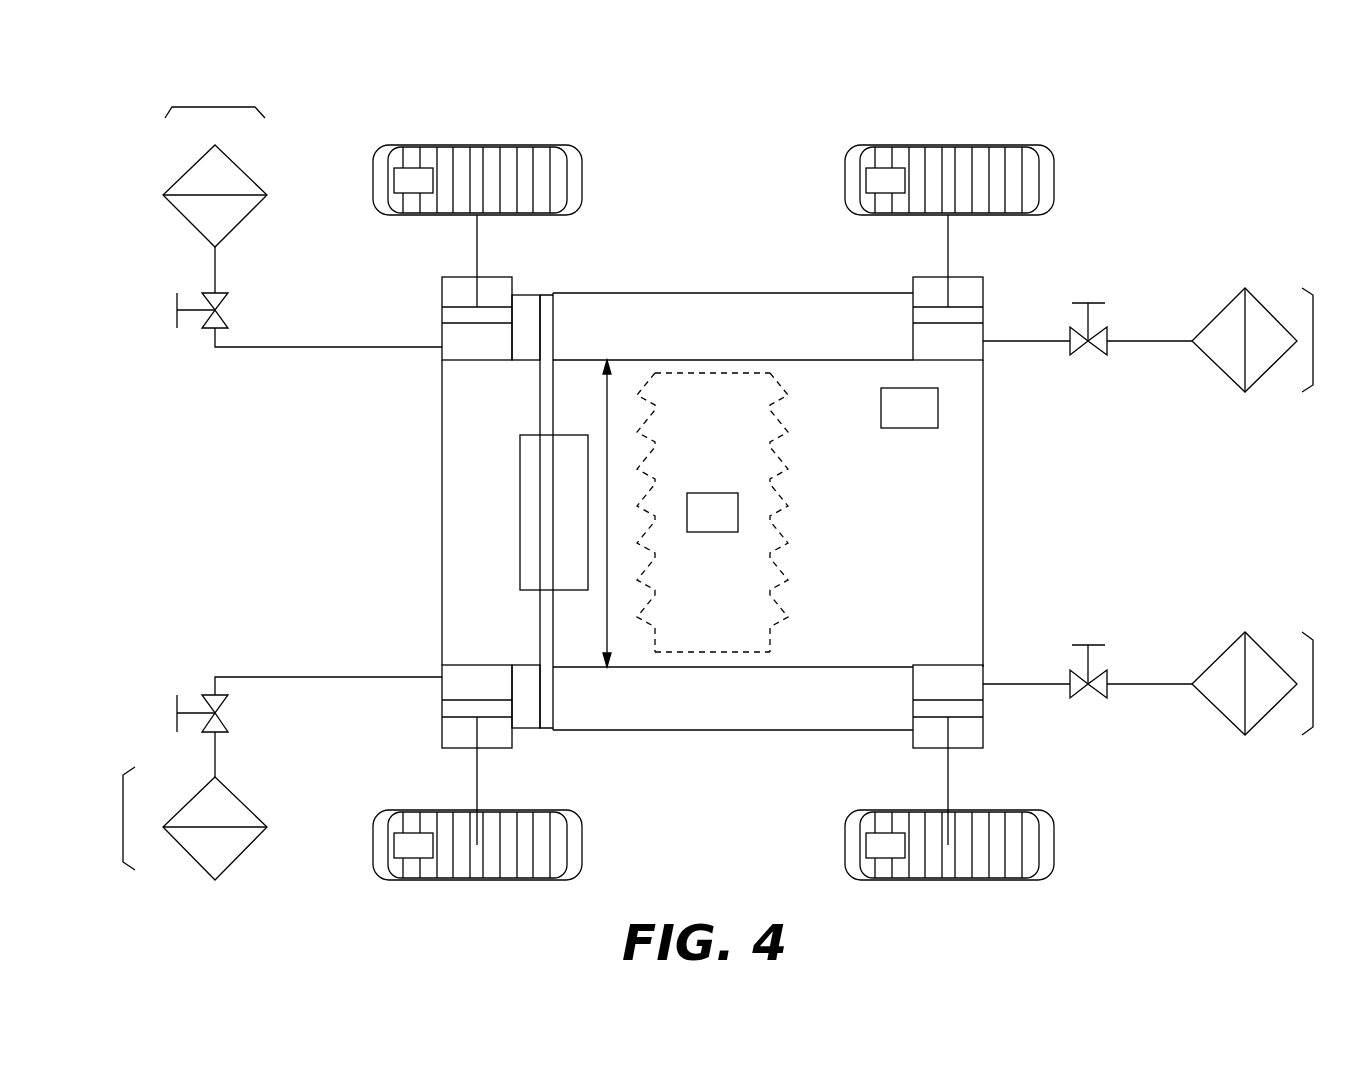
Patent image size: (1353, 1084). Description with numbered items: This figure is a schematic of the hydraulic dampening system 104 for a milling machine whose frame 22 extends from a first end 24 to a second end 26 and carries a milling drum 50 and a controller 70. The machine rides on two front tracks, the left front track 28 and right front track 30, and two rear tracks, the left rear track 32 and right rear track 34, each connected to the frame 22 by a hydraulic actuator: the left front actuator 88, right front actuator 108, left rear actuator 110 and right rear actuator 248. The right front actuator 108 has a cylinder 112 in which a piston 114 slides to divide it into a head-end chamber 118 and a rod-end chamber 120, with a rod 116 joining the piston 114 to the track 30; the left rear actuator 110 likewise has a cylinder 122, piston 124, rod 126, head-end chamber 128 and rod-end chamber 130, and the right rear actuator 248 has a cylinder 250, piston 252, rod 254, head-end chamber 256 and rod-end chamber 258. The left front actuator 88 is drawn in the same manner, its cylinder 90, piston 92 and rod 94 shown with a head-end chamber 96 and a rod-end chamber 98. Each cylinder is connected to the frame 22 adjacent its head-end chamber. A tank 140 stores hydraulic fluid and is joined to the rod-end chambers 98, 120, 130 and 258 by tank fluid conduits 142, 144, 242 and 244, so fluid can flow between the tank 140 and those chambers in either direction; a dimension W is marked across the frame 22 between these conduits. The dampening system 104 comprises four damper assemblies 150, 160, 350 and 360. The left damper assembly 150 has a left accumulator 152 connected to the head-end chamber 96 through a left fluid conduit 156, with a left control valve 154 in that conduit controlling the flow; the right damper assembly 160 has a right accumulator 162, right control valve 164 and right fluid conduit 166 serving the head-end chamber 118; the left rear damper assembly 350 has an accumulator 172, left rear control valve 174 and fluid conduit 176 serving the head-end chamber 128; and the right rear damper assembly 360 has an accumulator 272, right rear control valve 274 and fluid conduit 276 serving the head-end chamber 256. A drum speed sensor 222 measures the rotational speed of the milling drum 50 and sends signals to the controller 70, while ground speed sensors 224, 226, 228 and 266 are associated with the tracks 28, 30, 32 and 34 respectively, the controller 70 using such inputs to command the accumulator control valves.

The frame 22 is at (983, 467).
The first end 24 is at (1017, 532).
The second end 26 is at (427, 500).
The left front track 28 is at (1048, 175).
The right front track 30 is at (1052, 862).
The left rear track 32 is at (578, 175).
The right rear track 34 is at (576, 863).
The milling drum 50 is at (733, 571).
The controller 70 is at (909, 408).
The left front actuator 88 is at (997, 289).
The port 90 is at (913, 340).
The piston 92 is at (975, 318).
The piston rod 94 is at (948, 225).
The head-end chamber 96 is at (958, 350).
The rod-end chamber 98 is at (964, 285).
The hydraulic dampening system 104 is at (740, 107).
The right front actuator 108 is at (1012, 661).
The left rear actuator 110 is at (524, 284).
The cylinder 112 is at (913, 680).
The piston 114 is at (975, 708).
The rod 116 is at (948, 778).
The head-end chamber 118 is at (964, 676).
The rod-end chamber 120 is at (960, 738).
The cylinder 122 is at (442, 286).
The piston 124 is at (447, 316).
The rod 126 is at (477, 250).
The head-end chamber 128 is at (486, 361).
The rod-end chamber 130 is at (496, 286).
The tank 140 is at (554, 512).
The tank fluid conduit 142 is at (692, 293).
The tank fluid conduit 144 is at (715, 731).
The left damper assembly 150 is at (1313, 295).
The left accumulator 152 is at (1245, 290).
The left control valve 154 is at (1090, 303).
The left fluid conduit 156 is at (1140, 341).
The right damper assembly 160 is at (1313, 640).
The right accumulator 162 is at (1245, 632).
The right control valve 164 is at (1095, 645).
The right fluid conduit 166 is at (1140, 684).
The left rear accumulator 172 is at (254, 170).
The left rear control valve 174 is at (177, 303).
The left rear fluid conduit 176 is at (215, 264).
The drum speed sensor 222 is at (712, 512).
The ground speed sensor 224 is at (888, 178).
The ground speed sensor 226 is at (885, 850).
The ground speed sensor 228 is at (410, 178).
The tank fluid conduit 242 is at (544, 323).
The tank fluid conduit 244 is at (537, 729).
The right rear actuator 248 is at (557, 791).
The cylinder 250 is at (442, 695).
The piston 252 is at (502, 708).
The rod 254 is at (480, 778).
The head-end chamber 256 is at (478, 678).
The rod-end chamber 258 is at (460, 738).
The ground speed sensor 266 is at (413, 850).
The right rear accumulator 272 is at (248, 845).
The right rear control valve 274 is at (177, 700).
The right rear fluid conduit 276 is at (215, 757).
The left rear damper assembly 350 is at (212, 107).
The right rear damper assembly 360 is at (123, 818).
The width W is at (618, 513).